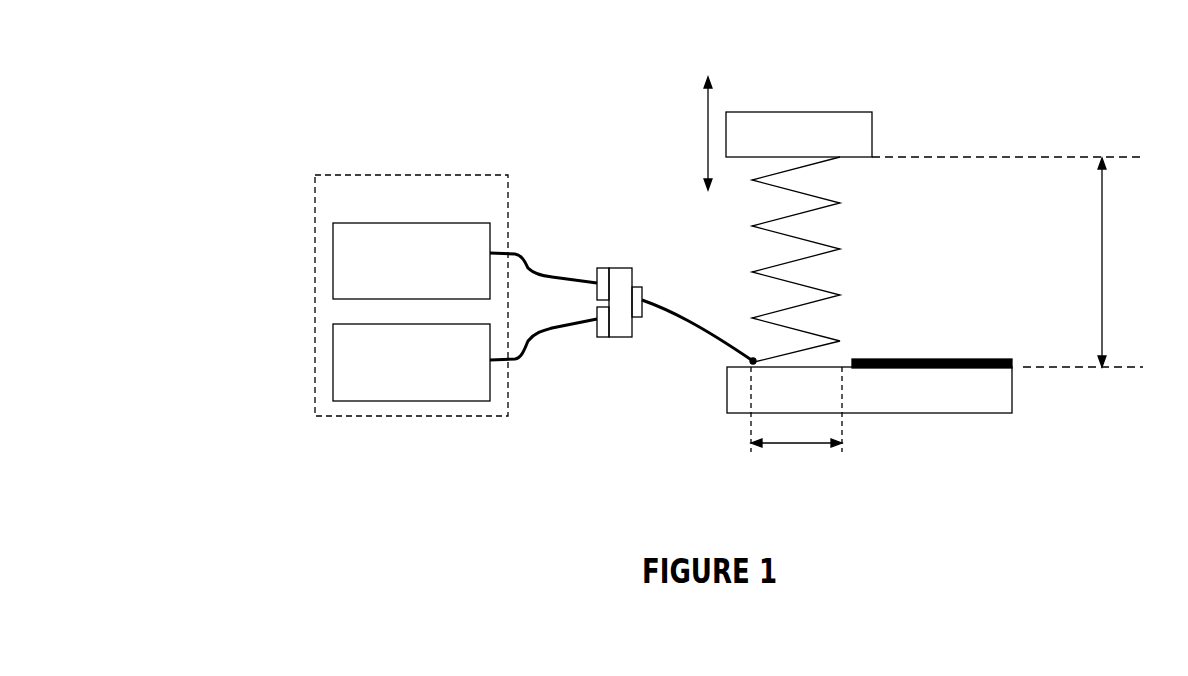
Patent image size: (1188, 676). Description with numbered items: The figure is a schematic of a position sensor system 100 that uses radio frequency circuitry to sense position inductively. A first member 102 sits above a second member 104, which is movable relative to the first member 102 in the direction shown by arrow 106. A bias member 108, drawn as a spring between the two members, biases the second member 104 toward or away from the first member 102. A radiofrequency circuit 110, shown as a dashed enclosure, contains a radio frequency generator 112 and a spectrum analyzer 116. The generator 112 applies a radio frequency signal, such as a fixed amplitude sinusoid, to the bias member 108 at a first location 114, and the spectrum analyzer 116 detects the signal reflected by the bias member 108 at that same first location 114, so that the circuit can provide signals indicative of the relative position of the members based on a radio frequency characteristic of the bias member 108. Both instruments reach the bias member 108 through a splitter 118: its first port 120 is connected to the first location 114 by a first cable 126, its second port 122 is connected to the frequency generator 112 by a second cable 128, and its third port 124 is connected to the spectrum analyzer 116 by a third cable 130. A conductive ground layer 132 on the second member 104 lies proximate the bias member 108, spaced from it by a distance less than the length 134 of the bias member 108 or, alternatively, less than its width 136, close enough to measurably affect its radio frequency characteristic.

The position sensor system 100 is at (485, 72).
The first member 102 is at (873, 130).
The second member 104 is at (1013, 388).
The arrow 106 is at (705, 122).
The bias member 108 is at (840, 250).
The radiofrequency circuit 110 is at (315, 203).
The radio frequency generator 112 is at (333, 257).
The first location 114 is at (750, 361).
The spectrum analyzer 116 is at (333, 350).
The splitter 118 is at (620, 267).
The first port 120 is at (644, 290).
The second port 122 is at (598, 267).
The third port 124 is at (597, 338).
The first cable 126 is at (690, 323).
The second cable 128 is at (527, 258).
The third cable 130 is at (525, 362).
The conductive ground layer 132 is at (1007, 361).
The length 134 is at (851, 166).
The width 136 is at (786, 446).